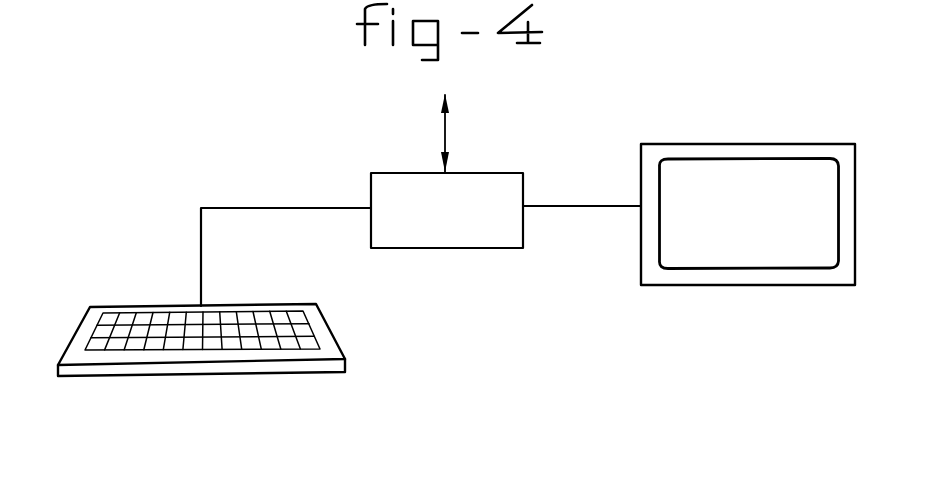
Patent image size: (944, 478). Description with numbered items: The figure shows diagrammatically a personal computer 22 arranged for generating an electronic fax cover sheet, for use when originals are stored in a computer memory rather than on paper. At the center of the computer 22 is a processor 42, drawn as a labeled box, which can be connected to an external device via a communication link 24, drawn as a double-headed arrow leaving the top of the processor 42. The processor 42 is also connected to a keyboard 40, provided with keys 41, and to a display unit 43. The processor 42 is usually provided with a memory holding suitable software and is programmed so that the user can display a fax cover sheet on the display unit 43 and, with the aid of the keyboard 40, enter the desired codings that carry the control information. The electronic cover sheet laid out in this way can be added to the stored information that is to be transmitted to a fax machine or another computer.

The computer 22 is at (268, 190).
The communication link 24 is at (445, 133).
The keyboard 40 is at (252, 353).
The keys 41 is at (295, 318).
The processor 42 is at (475, 248).
The display unit 43 is at (720, 257).